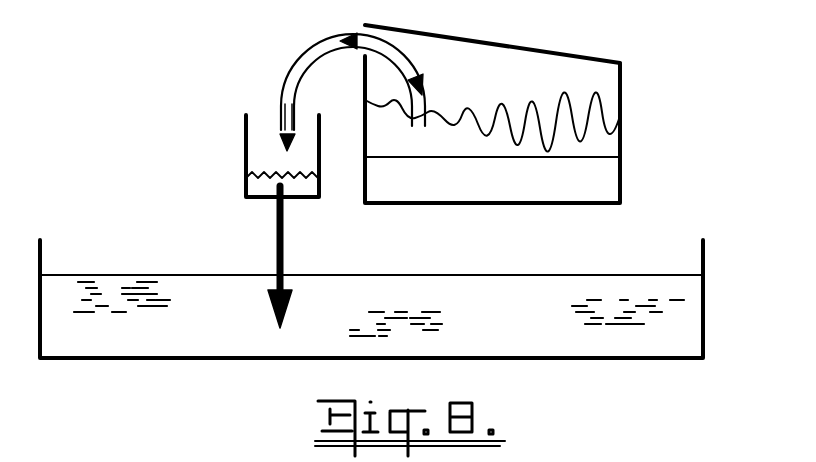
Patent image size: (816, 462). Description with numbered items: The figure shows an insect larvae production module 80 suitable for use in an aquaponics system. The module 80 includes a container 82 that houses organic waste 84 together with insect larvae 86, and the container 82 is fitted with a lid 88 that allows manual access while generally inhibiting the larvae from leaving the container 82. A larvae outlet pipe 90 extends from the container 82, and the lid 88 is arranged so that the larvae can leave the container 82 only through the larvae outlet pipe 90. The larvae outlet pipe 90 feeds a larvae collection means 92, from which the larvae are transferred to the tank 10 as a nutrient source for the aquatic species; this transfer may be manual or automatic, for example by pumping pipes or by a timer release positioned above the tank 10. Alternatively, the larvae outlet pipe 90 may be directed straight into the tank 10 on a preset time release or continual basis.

The tank 10 is at (712, 296).
The insect larvae production module 80 is at (648, 132).
The container 82 is at (622, 86).
The organic waste 84 is at (496, 188).
The insect larvae 86 is at (608, 143).
The lid 88 is at (523, 50).
The larvae outlet pipe 90 is at (311, 52).
The larvae collection means 92 is at (247, 150).